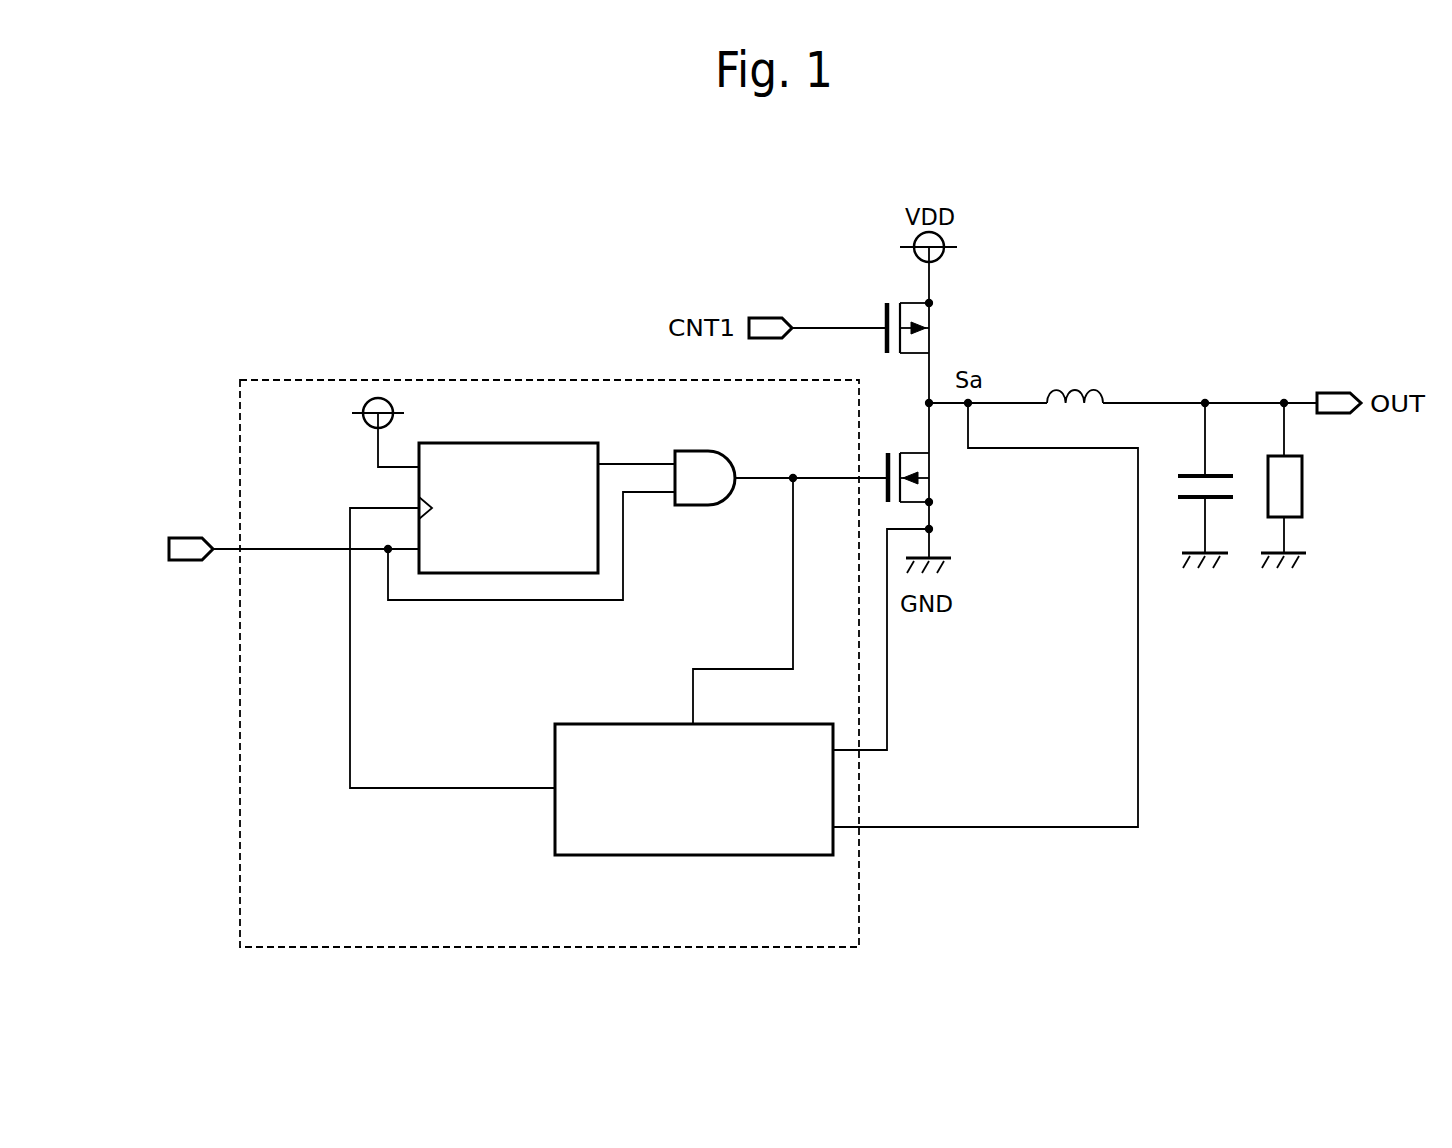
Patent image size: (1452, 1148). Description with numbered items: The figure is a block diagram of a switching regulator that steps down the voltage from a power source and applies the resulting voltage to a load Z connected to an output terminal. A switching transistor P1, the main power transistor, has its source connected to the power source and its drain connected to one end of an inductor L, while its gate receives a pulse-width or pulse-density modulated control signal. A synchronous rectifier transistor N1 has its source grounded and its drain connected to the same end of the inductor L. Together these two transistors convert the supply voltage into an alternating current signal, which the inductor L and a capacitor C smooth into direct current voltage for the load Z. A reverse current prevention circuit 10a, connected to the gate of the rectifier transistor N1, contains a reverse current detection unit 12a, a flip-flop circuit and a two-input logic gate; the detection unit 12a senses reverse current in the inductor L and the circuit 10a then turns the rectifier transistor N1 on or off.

The reverse current prevention circuit 10a is at (452, 380).
The reverse current detection unit 12a is at (600, 724).
The switching transistor P1 is at (1021, 319).
The synchronous rectifier transistor N1 is at (1010, 501).
The inductor L is at (1083, 377).
The capacitor C is at (1208, 485).
The load Z is at (1297, 485).